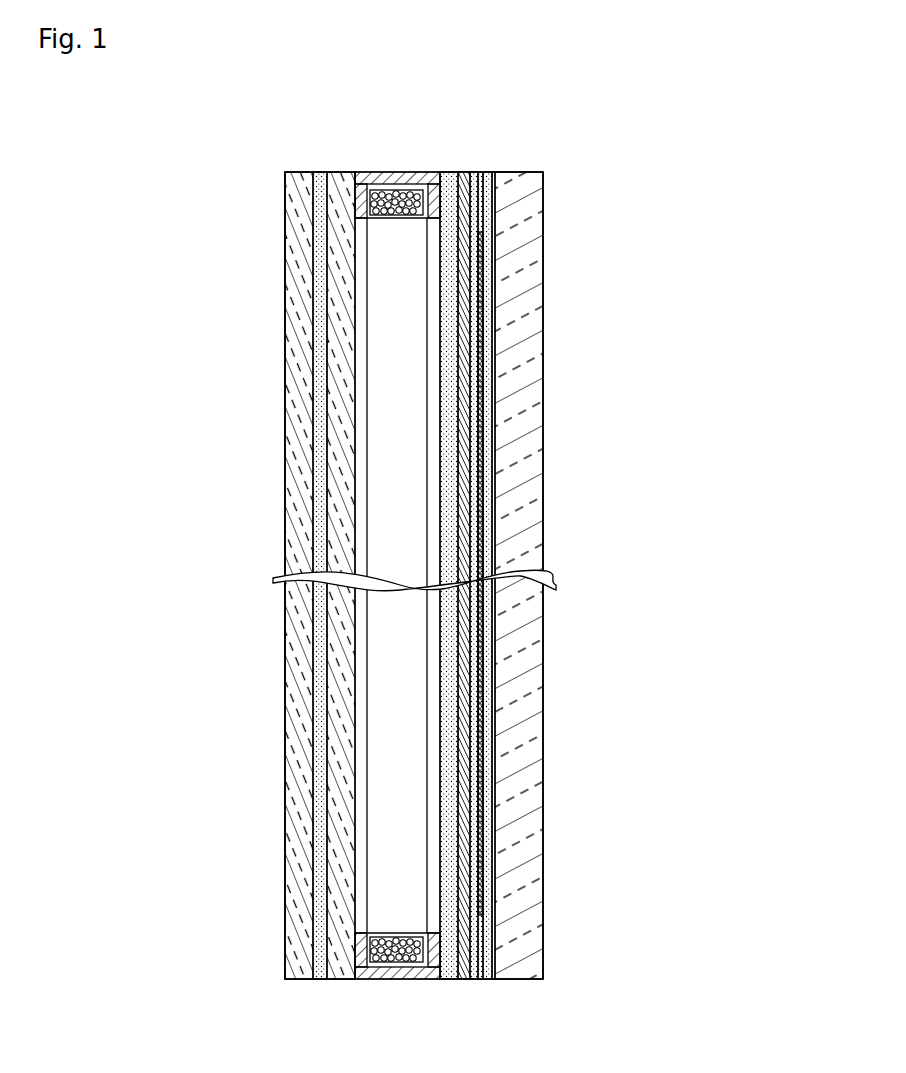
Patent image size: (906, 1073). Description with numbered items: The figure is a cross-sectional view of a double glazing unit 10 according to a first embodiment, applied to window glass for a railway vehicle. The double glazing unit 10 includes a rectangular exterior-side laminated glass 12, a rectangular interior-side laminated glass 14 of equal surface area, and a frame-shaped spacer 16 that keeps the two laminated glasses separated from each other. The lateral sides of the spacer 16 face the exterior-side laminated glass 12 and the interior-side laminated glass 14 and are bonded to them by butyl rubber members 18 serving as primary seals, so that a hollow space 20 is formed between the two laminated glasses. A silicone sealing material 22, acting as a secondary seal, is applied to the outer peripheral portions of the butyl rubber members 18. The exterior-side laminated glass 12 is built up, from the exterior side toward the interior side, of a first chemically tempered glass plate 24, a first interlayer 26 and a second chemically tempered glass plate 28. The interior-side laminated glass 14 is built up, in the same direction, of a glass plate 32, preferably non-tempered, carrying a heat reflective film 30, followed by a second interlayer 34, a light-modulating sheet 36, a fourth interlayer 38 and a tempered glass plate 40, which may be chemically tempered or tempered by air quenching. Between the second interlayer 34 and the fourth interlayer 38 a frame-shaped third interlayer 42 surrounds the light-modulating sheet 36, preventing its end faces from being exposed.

The double glazing unit 10 is at (571, 135).
The exterior-side laminated glass 12 is at (285, 166).
The interior-side laminated glass 14 is at (543, 166).
The spacer 16 is at (374, 269).
The butyl rubber members 18 is at (368, 208).
The hollow space 20 is at (382, 537).
The silicone sealing material 22 is at (420, 178).
The first chemically tempered glass plate 24 is at (292, 950).
The first interlayer 26 is at (320, 979).
The second chemically tempered glass plate 28 is at (348, 979).
The heat reflective film 30 is at (465, 979).
The glass plate 32 is at (453, 979).
The second interlayer 34 is at (477, 979).
The light-modulating sheet 36 is at (490, 877).
The fourth interlayer 38 is at (495, 920).
The tempered glass plate 40 is at (543, 835).
The third interlayer 42 is at (483, 953).